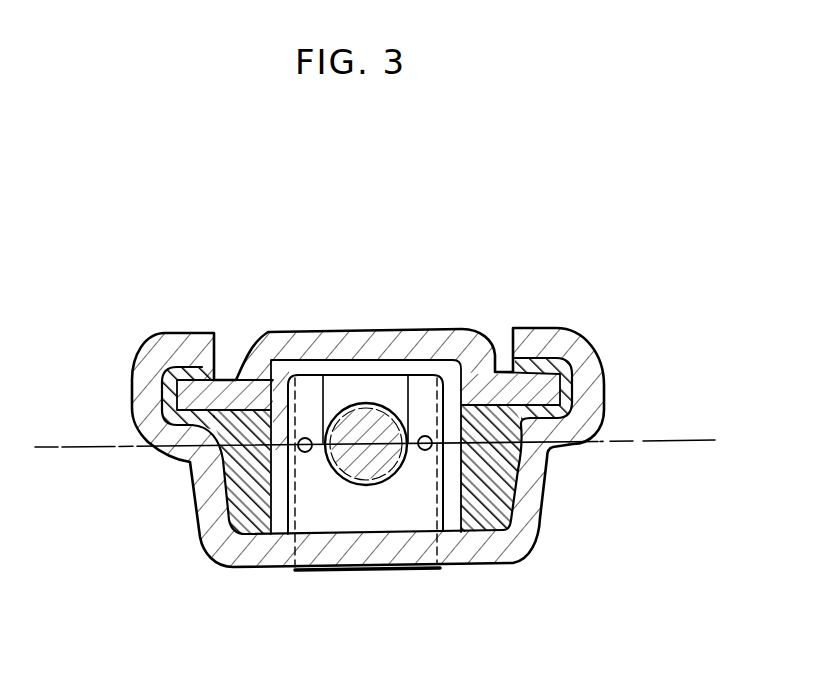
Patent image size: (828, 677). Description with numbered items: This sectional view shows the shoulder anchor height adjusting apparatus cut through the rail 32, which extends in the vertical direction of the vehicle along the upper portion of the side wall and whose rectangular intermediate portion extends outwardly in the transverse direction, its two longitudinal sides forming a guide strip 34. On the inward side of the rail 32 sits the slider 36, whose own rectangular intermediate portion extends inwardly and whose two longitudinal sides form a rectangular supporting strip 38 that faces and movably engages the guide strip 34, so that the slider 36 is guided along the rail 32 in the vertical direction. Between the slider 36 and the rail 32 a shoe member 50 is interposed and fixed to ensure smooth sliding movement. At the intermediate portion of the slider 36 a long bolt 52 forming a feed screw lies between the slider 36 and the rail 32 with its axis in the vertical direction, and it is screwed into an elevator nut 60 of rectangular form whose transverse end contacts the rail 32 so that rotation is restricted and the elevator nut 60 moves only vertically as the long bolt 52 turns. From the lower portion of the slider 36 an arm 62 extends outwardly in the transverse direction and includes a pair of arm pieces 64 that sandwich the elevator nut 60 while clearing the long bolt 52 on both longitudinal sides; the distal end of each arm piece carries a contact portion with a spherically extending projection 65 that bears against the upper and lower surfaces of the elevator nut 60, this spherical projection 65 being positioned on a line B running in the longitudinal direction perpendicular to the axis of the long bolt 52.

The rail 32 is at (346, 331).
The guide strip 34 is at (208, 395).
The slider 36 is at (197, 538).
The supporting strip 38 is at (141, 365).
The shoe member 50 is at (542, 510).
The long bolt 52 is at (372, 412).
The elevator nut 60 is at (357, 382).
The arm 62 is at (287, 503).
The arm pieces 64 is at (333, 508).
The spherically extending projection 65 is at (305, 437).
The line B is at (665, 441).